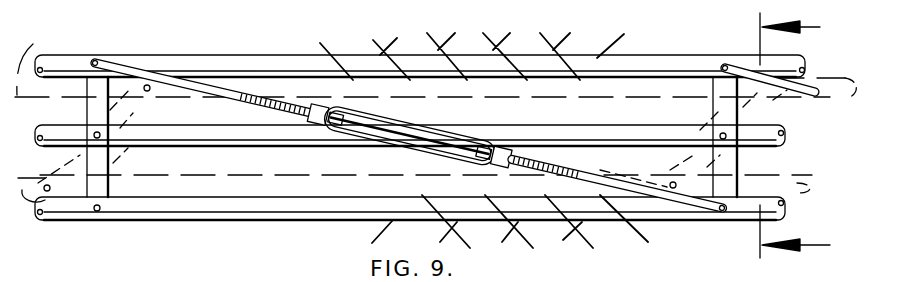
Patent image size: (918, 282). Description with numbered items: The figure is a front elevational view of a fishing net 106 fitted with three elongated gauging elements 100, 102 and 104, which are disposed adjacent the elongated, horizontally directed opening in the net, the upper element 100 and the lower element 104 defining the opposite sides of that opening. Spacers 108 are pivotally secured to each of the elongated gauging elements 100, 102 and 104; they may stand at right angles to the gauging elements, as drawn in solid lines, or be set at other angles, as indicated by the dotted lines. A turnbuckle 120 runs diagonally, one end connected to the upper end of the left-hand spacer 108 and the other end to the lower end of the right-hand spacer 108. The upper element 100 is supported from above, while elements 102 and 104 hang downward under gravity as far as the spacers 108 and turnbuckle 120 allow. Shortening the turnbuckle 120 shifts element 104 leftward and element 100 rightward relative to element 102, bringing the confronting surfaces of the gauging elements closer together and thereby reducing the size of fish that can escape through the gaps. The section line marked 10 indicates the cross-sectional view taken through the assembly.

The section line 10- 10 is at (810, 136).
The elongated gauging element 100 is at (63, 63).
The elongated gauging element 102 is at (221, 144).
The elongated gauging element 104 is at (62, 221).
The fishing net 106 is at (428, 33).
The spacer 108 is at (110, 163).
The turnbuckle 120 is at (386, 149).